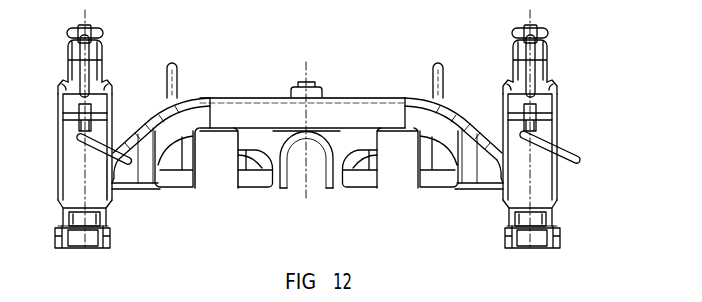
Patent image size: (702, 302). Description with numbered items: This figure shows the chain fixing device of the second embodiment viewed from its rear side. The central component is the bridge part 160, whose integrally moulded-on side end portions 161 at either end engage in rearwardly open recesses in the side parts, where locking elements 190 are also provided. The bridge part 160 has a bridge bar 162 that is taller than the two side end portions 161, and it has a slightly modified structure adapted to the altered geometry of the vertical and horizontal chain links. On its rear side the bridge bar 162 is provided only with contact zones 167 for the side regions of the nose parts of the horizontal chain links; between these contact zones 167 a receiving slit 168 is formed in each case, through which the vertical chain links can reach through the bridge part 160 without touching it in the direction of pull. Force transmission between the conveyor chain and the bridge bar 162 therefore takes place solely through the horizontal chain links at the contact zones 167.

The bridge part 160 is at (307, 137).
The side end portions 161 is at (108, 168).
The bridge bar 162 is at (265, 112).
The contact zones 167 is at (180, 176).
The receiving slit 168 is at (215, 160).
The locking elements 190 is at (102, 128).